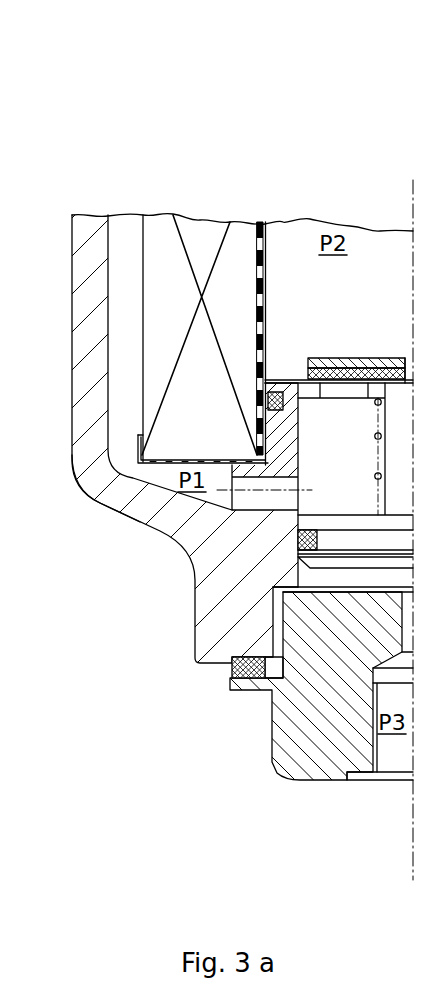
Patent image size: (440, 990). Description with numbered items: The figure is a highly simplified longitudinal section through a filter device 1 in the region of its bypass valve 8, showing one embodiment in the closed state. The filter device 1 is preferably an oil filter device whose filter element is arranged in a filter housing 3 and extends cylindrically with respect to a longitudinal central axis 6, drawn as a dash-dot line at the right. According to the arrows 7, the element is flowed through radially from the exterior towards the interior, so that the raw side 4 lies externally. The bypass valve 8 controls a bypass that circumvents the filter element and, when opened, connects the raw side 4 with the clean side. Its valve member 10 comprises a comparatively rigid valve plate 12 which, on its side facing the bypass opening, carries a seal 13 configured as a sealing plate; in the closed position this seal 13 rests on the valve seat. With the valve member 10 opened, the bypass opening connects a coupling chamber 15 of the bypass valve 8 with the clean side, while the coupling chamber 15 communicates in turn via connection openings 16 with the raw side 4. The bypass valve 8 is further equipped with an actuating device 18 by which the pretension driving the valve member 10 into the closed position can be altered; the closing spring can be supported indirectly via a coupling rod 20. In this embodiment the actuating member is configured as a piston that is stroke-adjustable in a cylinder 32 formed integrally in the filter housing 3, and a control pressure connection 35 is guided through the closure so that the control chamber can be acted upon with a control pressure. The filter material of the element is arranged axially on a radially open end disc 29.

The filter device 1 is at (153, 143).
The filter housing 3 is at (92, 290).
The raw side 4 is at (117, 349).
The longitudinal central axis 6 is at (412, 213).
The arrows 7 is at (173, 288).
The bypass valve 8 is at (252, 627).
The valve member 10 is at (360, 356).
The valve plate 12 is at (331, 362).
The seal 13 is at (305, 378).
The coupling chamber 15 is at (331, 439).
The connection openings 16 is at (187, 513).
The actuating device 18 is at (342, 567).
The coupling rod 20 is at (400, 453).
The end disc 29 is at (157, 462).
The cylinder 32 is at (262, 423).
The control pressure connection 35 is at (392, 753).